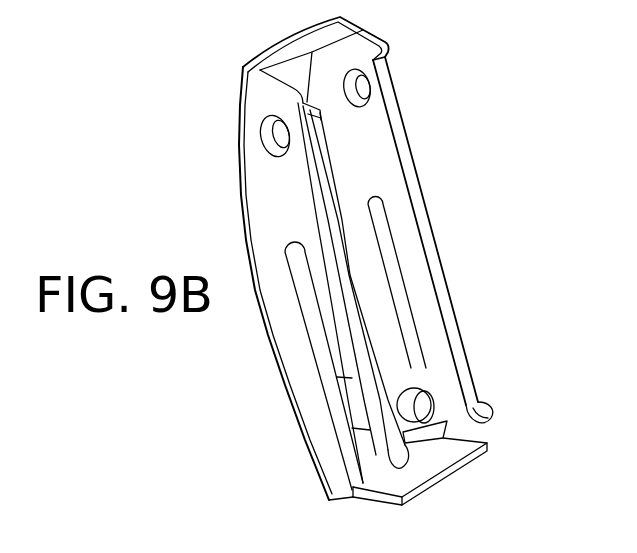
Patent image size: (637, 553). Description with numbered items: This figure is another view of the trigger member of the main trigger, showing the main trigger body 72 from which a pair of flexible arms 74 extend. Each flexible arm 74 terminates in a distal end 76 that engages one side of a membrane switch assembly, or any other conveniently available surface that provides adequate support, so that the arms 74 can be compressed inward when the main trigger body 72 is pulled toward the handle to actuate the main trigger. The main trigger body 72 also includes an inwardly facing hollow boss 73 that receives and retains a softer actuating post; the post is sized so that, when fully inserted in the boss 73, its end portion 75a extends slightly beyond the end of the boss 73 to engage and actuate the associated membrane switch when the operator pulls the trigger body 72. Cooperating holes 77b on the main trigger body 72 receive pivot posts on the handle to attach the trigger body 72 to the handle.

The main trigger body 72 is at (240, 172).
The hollow boss 73 is at (393, 382).
The flexible arms 74 is at (438, 268).
The end portion 75a is at (427, 410).
The distal end 76 is at (490, 410).
The holes 77b is at (272, 134).